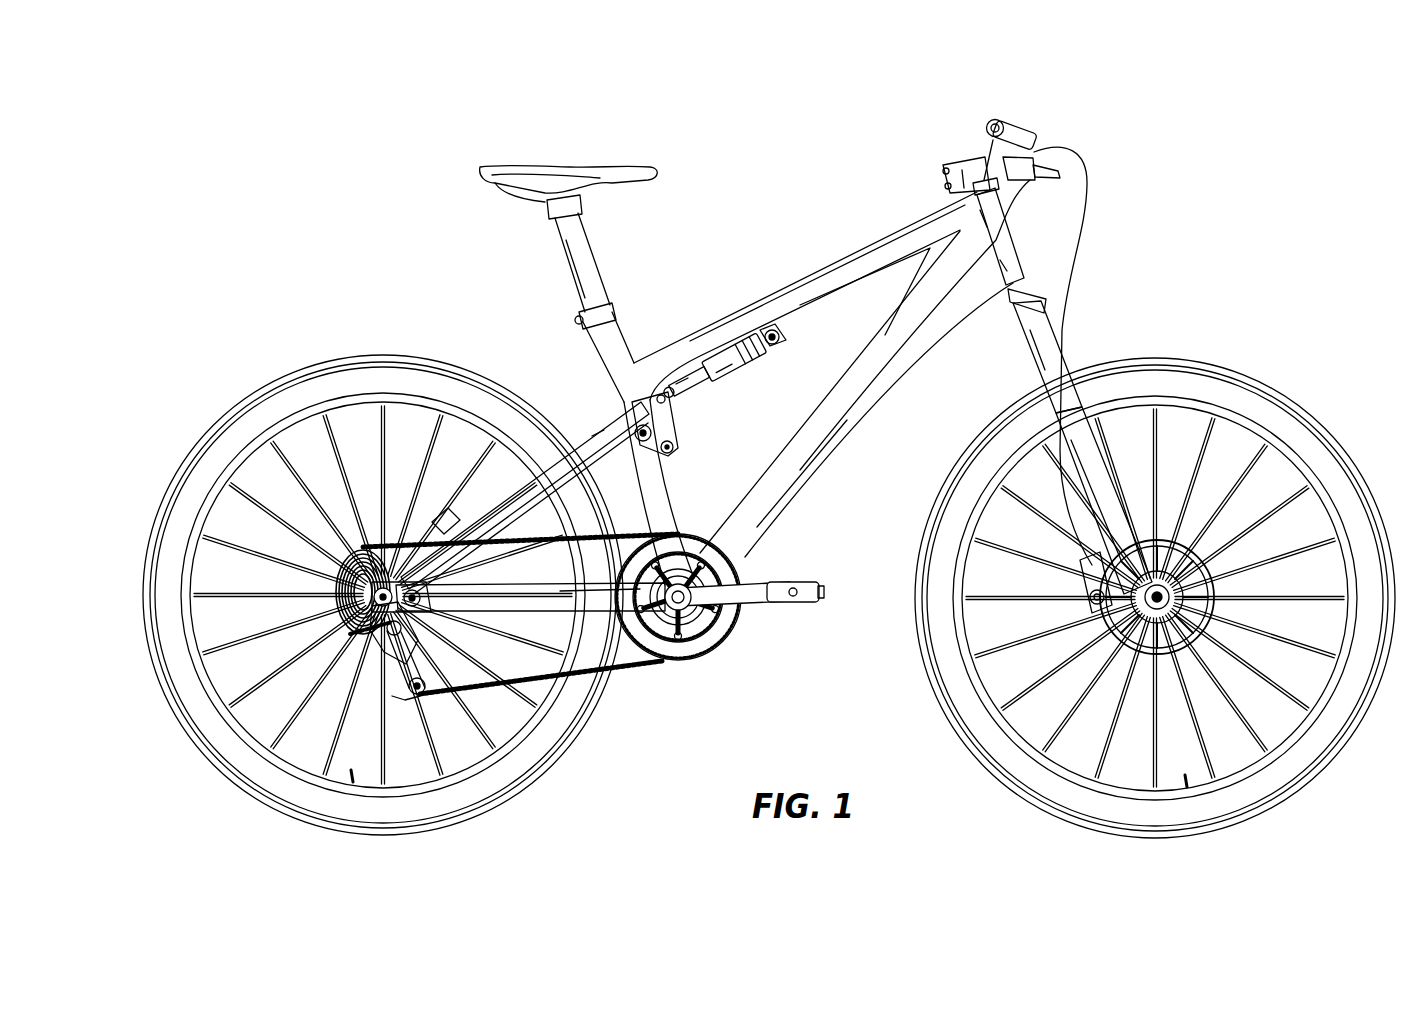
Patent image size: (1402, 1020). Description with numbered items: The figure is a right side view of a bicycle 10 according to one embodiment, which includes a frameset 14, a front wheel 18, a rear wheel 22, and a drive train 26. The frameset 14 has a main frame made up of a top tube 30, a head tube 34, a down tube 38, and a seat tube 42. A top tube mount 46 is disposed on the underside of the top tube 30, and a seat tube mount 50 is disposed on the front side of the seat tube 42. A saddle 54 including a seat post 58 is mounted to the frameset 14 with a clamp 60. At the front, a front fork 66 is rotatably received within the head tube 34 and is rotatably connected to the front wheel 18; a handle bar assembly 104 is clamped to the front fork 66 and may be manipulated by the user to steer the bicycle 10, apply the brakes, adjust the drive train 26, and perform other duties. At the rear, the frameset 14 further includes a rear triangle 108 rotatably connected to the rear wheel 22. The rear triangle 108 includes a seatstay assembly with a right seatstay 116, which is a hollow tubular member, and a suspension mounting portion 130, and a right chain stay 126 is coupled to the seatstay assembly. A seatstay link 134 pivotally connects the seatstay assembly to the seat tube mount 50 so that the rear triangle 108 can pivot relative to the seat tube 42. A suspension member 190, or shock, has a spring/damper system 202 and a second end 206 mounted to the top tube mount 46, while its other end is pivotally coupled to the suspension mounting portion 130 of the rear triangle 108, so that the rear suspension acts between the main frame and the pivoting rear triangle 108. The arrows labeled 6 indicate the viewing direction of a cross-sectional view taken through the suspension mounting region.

The bicycle 10 is at (714, 147).
The frameset 14 is at (760, 268).
The front wheel 18 is at (1297, 430).
The rear wheel 22 is at (192, 466).
The drive train 26 is at (720, 670).
The top tube 30 is at (872, 251).
The head tube 34 is at (1032, 235).
The down tube 38 is at (897, 338).
The seat tube 42 is at (667, 503).
The top tube mount 46 is at (784, 320).
The seat tube mount 50 is at (672, 459).
The saddle 54 is at (542, 168).
The seat post 58 is at (580, 236).
The clamp 60 is at (616, 300).
The front fork 66 is at (1049, 352).
The handle bar assembly 104 is at (1033, 130).
The rear triangle 108 is at (541, 456).
The right seatstay 116 is at (503, 500).
The right chain stay 126 is at (571, 600).
The suspension mounting portion 130 is at (609, 403).
The seatstay link 134 is at (683, 443).
The suspension member 190 is at (744, 384).
The spring/damper system 202 is at (722, 386).
The second end 206 is at (777, 343).
The section view direction 6 is at (681, 378).